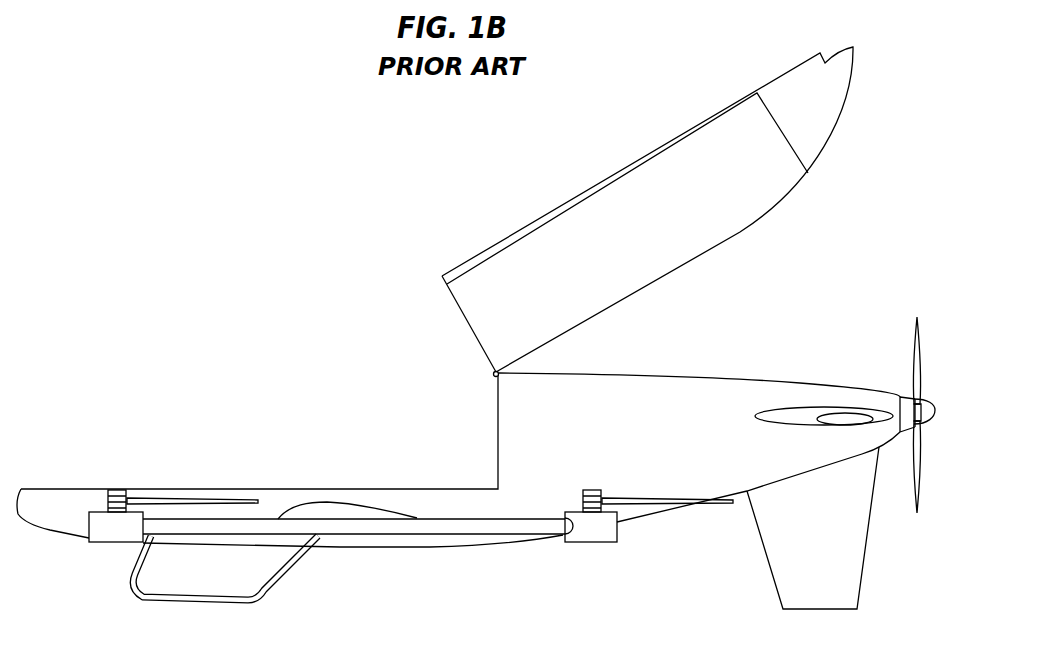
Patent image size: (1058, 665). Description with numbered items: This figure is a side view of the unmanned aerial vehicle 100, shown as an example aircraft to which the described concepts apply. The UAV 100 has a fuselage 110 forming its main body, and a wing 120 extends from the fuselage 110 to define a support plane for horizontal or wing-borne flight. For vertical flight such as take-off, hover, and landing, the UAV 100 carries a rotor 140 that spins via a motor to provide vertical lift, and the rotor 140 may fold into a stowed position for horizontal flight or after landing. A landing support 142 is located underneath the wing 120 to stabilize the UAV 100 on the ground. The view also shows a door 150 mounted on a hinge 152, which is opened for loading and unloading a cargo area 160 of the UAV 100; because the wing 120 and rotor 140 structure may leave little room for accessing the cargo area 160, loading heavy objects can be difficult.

The unmanned aerial vehicle 100 is at (178, 150).
The fuselage 110 is at (627, 376).
The wing 120 is at (357, 512).
The rotor 140 is at (594, 490).
The landing support 142 is at (170, 598).
The door 150 is at (560, 206).
The hinge 152 is at (493, 377).
The cargo area 160 is at (178, 378).